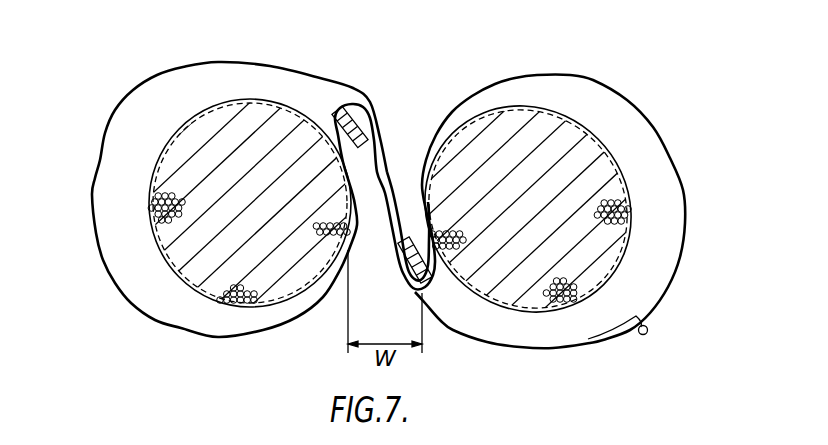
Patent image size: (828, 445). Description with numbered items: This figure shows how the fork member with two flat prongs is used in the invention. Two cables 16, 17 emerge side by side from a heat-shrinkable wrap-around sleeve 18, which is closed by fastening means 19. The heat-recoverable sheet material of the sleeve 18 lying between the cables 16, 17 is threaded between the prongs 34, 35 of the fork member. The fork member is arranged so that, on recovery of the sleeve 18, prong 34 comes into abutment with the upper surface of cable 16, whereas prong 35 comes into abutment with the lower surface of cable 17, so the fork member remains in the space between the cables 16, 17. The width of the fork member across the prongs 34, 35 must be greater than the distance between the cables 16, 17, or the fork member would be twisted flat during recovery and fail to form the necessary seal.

The cable 16 is at (195, 140).
The cable 17 is at (583, 150).
The heat-shrinkable wrap-around sleeve 18 is at (675, 170).
The fastening means 19 is at (640, 338).
The prong 34 is at (355, 132).
The prong 35 is at (398, 272).